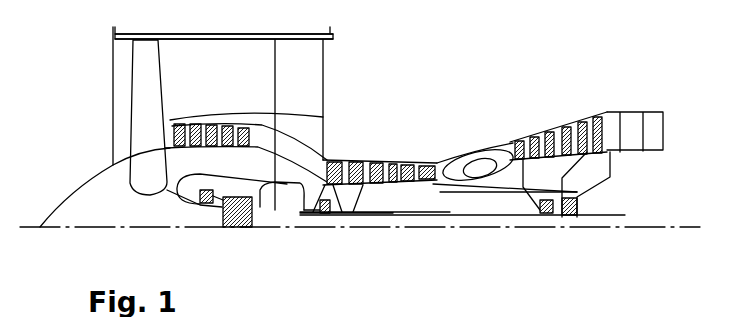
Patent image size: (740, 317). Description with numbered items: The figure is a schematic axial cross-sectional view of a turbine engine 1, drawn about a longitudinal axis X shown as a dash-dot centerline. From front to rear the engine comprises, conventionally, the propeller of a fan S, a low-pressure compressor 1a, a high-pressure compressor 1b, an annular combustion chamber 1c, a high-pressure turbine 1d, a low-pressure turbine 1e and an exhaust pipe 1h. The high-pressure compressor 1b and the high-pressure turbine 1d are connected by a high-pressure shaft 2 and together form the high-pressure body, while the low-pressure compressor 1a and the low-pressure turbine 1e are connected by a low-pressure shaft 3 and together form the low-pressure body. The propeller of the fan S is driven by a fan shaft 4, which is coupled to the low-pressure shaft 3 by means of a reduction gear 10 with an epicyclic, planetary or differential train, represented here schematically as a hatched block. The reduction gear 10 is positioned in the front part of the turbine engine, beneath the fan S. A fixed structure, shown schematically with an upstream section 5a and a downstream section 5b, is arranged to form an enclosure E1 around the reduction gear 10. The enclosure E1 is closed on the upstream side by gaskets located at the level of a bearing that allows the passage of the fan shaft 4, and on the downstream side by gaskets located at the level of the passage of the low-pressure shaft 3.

The turbine engine 1 is at (369, 149).
The low-pressure compressor 1a is at (190, 118).
The high-pressure compressor 1b is at (350, 158).
The annular combustion chamber 1c is at (473, 163).
The high-pressure turbine 1d is at (517, 163).
The low-pressure turbine 1e is at (607, 112).
The exhaust pipe 1h is at (652, 128).
The fan S is at (143, 80).
The longitudinal axis X is at (25, 232).
The high-pressure shaft 2 is at (472, 193).
The low-pressure shaft 3 is at (400, 228).
The fan shaft 4 is at (192, 207).
The upstream section 5a is at (177, 203).
The downstream section 5b is at (303, 213).
The reduction gear 10 is at (233, 227).
The enclosure E1 is at (260, 190).